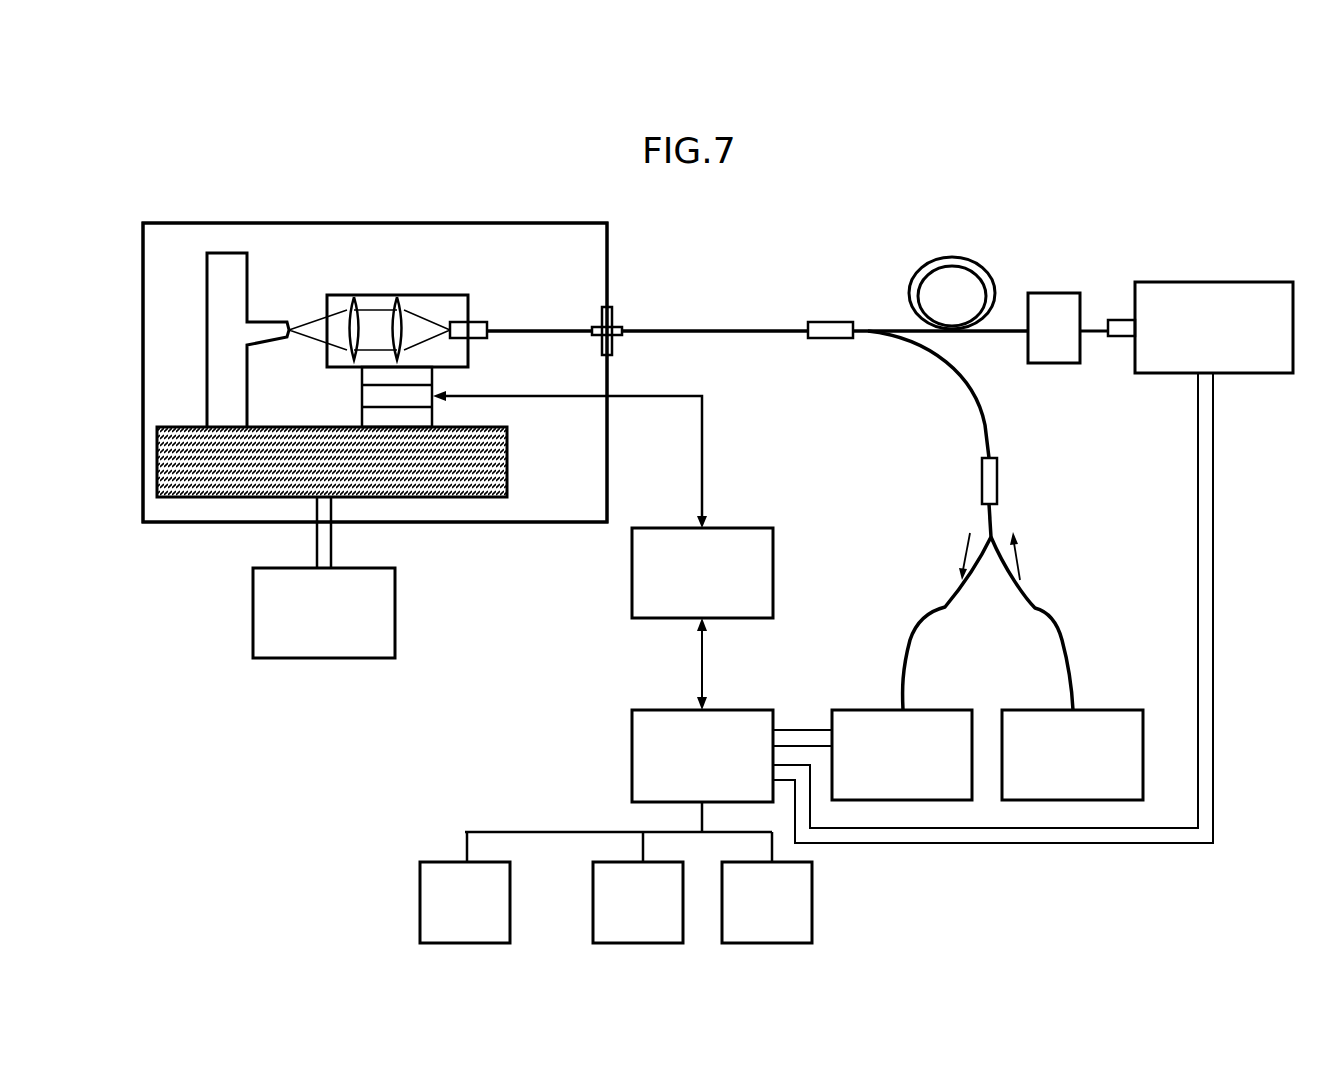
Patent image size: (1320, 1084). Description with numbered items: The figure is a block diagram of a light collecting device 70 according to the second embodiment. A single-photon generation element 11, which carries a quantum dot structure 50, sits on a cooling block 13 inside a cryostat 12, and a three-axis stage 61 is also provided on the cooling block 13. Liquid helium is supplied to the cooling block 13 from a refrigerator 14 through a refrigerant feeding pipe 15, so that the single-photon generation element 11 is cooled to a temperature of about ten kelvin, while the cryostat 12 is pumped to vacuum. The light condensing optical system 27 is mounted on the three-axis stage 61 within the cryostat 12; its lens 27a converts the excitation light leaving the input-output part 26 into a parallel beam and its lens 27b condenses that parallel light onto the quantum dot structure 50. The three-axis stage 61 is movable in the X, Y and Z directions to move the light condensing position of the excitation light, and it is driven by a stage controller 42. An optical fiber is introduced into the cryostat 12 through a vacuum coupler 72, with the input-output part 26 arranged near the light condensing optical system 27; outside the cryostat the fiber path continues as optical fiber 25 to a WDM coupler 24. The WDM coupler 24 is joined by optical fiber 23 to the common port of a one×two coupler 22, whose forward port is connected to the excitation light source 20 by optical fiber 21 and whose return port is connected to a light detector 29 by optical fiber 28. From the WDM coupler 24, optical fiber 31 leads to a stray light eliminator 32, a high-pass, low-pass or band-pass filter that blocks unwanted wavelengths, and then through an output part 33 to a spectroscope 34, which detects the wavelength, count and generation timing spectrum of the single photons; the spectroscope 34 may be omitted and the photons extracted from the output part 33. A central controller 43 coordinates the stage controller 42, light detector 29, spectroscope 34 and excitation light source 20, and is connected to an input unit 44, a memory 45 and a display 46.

The light collecting device 70 is at (172, 161).
The single-photon generation element 11 is at (234, 232).
The quantum dot structure 50 is at (274, 298).
The light condensing optical system 27 is at (418, 168).
The lens 27a is at (397, 294).
The lens 27b is at (355, 294).
The input-output part 26 is at (481, 320).
The three-axis stage 61 is at (345, 372).
The cooling block 13 is at (156, 467).
The cryostat 12 is at (493, 524).
The refrigerant feeding pipe 15 is at (316, 546).
The refrigerator 14 is at (328, 660).
The vacuum coupler 72 is at (617, 317).
The optical fiber 25 is at (718, 330).
The WDM coupler 24 is at (832, 320).
The optical fiber 31 is at (952, 257).
The stray light eliminator 32 is at (1054, 292).
The output part 33 is at (1121, 319).
The spectroscope 34 is at (1205, 281).
The optical fiber 23 is at (984, 412).
The one×two coupler 22 is at (999, 481).
The optical fiber 28 is at (912, 637).
The optical fiber 21 is at (1064, 637).
The light detector 29 is at (945, 709).
The excitation light source 20 is at (1106, 709).
The stage controller 42 is at (736, 527).
The central controller 43 is at (738, 709).
The input unit 44 is at (813, 903).
The memory 45 is at (592, 905).
The display 46 is at (419, 905).